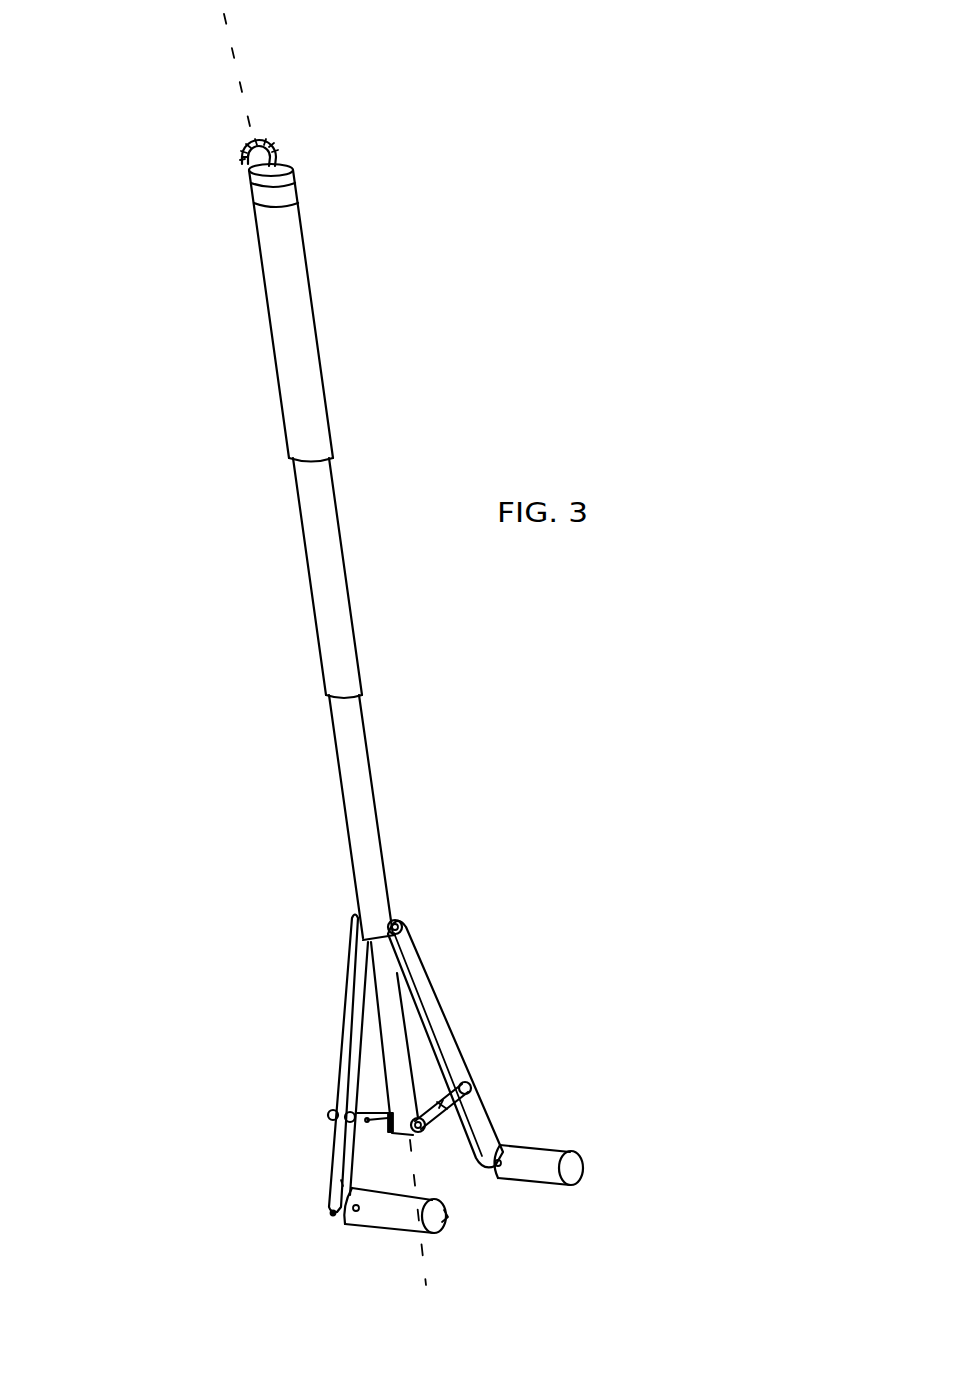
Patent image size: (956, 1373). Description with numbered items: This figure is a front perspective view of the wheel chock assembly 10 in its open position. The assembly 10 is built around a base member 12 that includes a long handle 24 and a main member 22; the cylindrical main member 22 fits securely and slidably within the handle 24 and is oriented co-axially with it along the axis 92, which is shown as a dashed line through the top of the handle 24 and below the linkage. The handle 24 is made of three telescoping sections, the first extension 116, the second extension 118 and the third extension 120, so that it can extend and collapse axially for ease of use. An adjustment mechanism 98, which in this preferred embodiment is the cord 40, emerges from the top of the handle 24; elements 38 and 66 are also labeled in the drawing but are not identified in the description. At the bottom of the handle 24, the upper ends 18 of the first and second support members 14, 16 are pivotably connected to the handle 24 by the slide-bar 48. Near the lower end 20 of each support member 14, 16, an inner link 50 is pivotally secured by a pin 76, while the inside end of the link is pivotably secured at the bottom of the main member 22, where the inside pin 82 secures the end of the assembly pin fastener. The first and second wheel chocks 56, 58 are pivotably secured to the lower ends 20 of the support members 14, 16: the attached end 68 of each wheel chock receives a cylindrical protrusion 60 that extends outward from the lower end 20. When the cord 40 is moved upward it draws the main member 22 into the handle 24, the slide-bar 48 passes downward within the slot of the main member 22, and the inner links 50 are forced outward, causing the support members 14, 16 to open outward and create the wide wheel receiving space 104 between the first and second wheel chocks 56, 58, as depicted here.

The wheel chock assembly 10 is at (125, 663).
The base member 12 is at (295, 370).
The first support member 14 is at (357, 1045).
The second support member 16 is at (447, 1043).
The upper end 18 is at (363, 963).
The lower end 20 is at (343, 1183).
The main member 22 is at (397, 1070).
The handle 24 is at (313, 402).
The end cap 38 is at (283, 190).
The cord 40 is at (268, 148).
The slide-bar 48 is at (400, 927).
The inner link 50 is at (370, 1128).
The first wheel chock 56 is at (390, 1217).
The second wheel chock 58 is at (540, 1172).
The cylindrical protrusion 60 is at (333, 1213).
The roller end 66 is at (575, 1165).
The attached end 68 is at (358, 1208).
The pin 76 is at (330, 1123).
The inside pin 82 is at (420, 1135).
The axis 92 is at (245, 52).
The adjustment mechanism 98 is at (242, 152).
The wheel receiving space 104 is at (448, 1217).
The first extension 116 is at (296, 290).
The second extension 118 is at (335, 573).
The third extension 120 is at (363, 823).